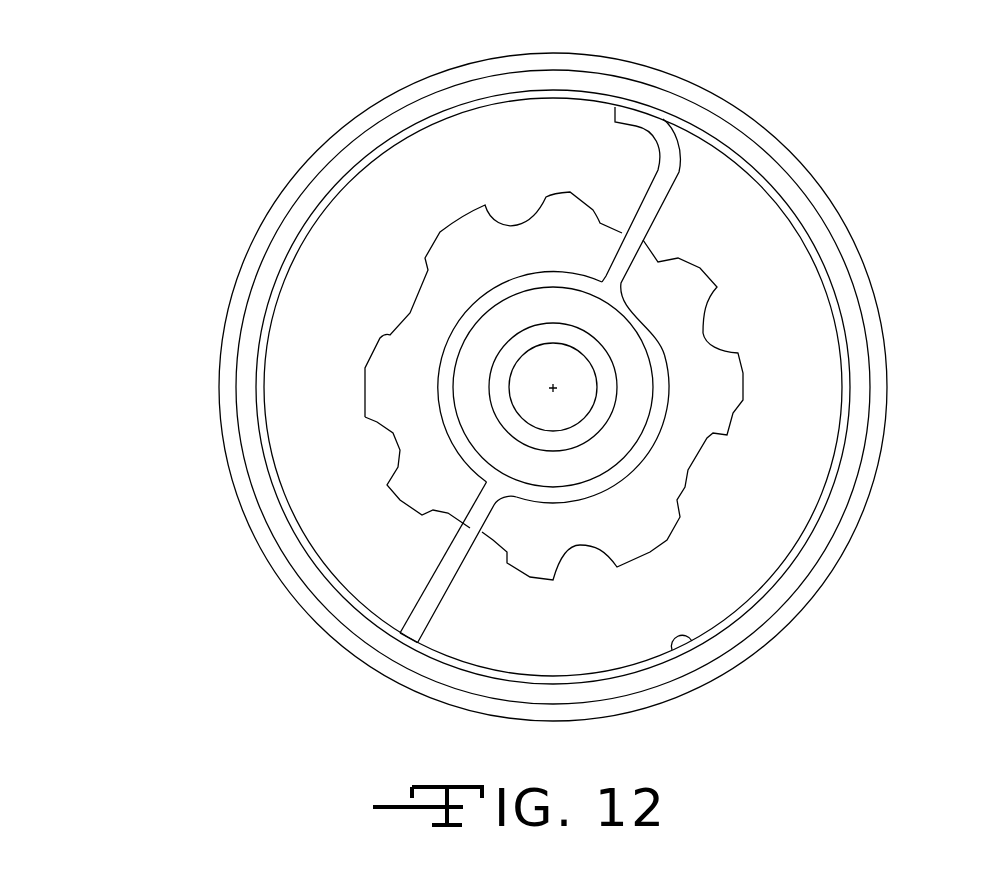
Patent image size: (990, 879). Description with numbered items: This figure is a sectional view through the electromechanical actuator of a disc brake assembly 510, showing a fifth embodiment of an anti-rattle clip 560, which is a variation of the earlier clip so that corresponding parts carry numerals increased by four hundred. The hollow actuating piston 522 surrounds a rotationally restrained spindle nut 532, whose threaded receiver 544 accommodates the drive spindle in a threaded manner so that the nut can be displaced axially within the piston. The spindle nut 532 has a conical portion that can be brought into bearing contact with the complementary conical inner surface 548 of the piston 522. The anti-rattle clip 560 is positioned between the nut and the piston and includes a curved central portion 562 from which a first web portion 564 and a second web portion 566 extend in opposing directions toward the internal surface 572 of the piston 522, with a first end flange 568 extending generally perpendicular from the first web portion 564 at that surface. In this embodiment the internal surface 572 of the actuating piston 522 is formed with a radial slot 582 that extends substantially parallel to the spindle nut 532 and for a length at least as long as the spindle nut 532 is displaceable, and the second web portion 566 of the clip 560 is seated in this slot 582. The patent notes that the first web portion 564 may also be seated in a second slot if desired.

The disc brake assembly 510 is at (778, 89).
The actuating piston 522 is at (815, 177).
The spindle nut 532 is at (553, 388).
The threaded receiver 544 is at (385, 372).
The conical inner surface 548 is at (368, 245).
The anti-rattle clip 560 is at (704, 409).
The curved central portion 562 is at (647, 457).
The first web portion 564 is at (640, 230).
The second web portion 566 is at (455, 538).
The first end flange 568 is at (648, 118).
The internal surface 572 is at (683, 633).
The radial slot 582 is at (402, 645).